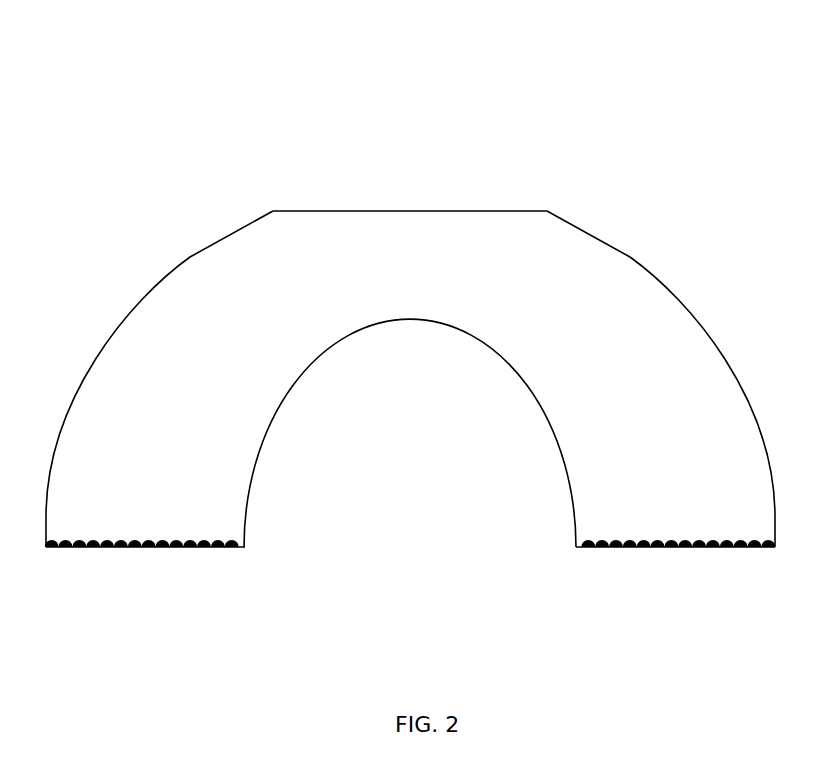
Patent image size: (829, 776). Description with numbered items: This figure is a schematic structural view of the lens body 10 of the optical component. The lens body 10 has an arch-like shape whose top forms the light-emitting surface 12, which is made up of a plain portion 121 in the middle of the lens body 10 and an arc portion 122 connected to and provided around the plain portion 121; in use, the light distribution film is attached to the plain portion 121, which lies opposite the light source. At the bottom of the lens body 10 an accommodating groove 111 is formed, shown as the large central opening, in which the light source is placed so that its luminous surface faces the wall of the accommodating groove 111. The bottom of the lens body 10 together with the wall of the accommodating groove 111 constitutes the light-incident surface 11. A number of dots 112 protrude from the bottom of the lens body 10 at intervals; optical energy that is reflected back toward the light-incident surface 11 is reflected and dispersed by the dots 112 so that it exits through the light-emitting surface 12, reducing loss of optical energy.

The lens body 10 is at (447, 69).
The light-incident surface 11 is at (410, 594).
The accommodating groove 111 is at (349, 525).
The dots 112 is at (163, 548).
The light-emitting surface 12 is at (506, 163).
The plain portion 121 is at (528, 211).
The arc portion 122 is at (582, 230).